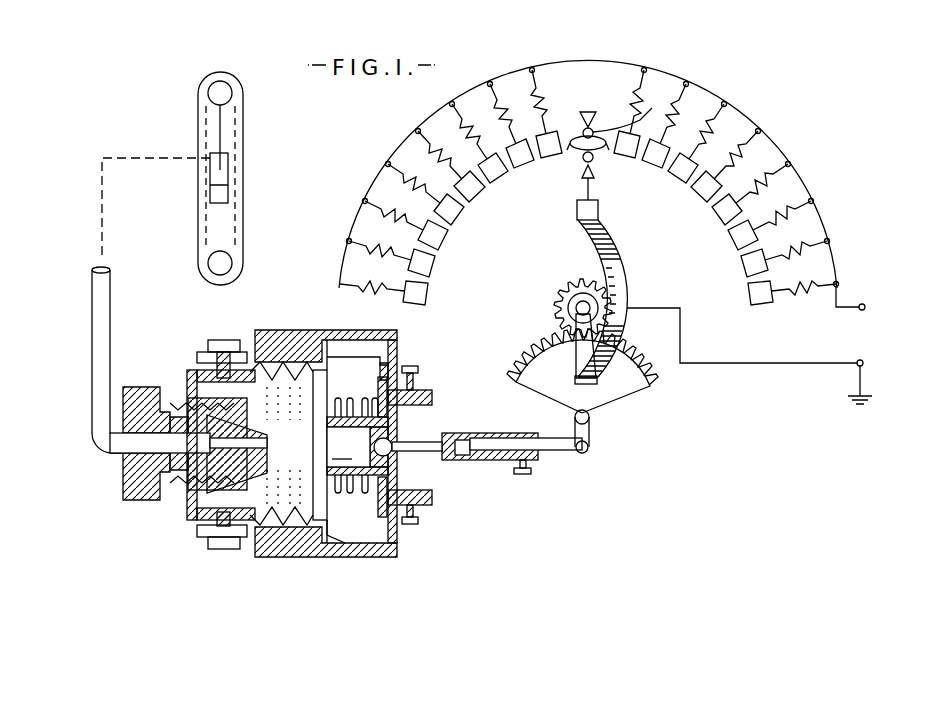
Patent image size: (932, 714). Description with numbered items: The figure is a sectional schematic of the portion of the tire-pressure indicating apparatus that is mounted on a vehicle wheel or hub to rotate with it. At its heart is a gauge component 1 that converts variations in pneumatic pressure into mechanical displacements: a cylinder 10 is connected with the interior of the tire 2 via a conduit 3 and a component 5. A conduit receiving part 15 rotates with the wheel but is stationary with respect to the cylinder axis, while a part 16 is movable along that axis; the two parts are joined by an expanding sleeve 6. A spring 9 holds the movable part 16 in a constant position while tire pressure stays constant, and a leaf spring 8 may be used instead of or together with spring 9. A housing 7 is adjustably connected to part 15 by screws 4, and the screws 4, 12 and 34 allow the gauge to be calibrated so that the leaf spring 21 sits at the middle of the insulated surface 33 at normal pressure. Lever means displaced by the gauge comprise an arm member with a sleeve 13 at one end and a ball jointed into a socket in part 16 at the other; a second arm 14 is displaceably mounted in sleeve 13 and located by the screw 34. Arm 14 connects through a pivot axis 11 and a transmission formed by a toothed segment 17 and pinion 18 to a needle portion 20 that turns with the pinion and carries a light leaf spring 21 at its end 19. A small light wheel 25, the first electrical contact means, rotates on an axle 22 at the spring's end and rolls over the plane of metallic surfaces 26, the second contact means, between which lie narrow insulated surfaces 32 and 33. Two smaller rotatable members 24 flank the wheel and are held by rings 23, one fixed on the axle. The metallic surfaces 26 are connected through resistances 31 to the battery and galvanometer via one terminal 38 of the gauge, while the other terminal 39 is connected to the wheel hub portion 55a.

The gauge component 1 is at (199, 565).
The tire 2 is at (223, 96).
The conduit 3 is at (103, 313).
The screws 4 is at (214, 352).
The component 5 is at (142, 388).
The expanding sleeve 6 is at (310, 556).
The housing 7 is at (266, 330).
The leaf spring 8 is at (363, 353).
The spring 9 is at (349, 400).
The cylinder 10 is at (359, 447).
The pivot axis 11 is at (589, 441).
The screw 12 is at (414, 524).
The sleeve 13 is at (452, 432).
The second arm 14 is at (552, 457).
The conduit receiving part 15 is at (186, 378).
The movable part 16 is at (325, 405).
The sector gear 17 is at (622, 345).
The pinion 18 is at (560, 304).
The end of needle portion 19 is at (592, 381).
The needle portion 20 is at (574, 366).
The leaf spring 21 is at (618, 263).
The axle 22 is at (600, 206).
The rings 23 is at (594, 128).
The rotatable members 24 is at (606, 140).
The wheel 25 is at (574, 140).
The metallic surfaces 26 is at (446, 223).
The resistances 31 is at (349, 241).
The insulated surfaces 32 is at (428, 291).
The insulated surface 33 is at (571, 149).
The screw 34 is at (519, 473).
The terminal 38 is at (860, 303).
The terminal 39 is at (863, 360).
The wheel hub portion 55a is at (852, 399).